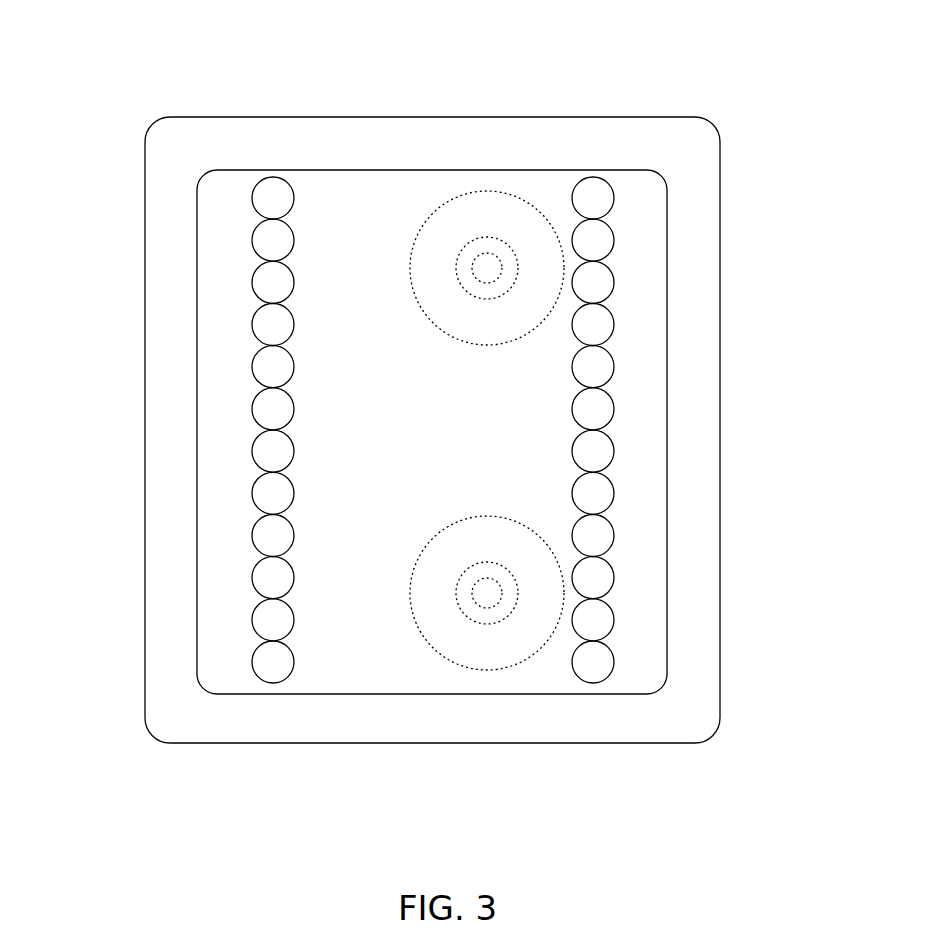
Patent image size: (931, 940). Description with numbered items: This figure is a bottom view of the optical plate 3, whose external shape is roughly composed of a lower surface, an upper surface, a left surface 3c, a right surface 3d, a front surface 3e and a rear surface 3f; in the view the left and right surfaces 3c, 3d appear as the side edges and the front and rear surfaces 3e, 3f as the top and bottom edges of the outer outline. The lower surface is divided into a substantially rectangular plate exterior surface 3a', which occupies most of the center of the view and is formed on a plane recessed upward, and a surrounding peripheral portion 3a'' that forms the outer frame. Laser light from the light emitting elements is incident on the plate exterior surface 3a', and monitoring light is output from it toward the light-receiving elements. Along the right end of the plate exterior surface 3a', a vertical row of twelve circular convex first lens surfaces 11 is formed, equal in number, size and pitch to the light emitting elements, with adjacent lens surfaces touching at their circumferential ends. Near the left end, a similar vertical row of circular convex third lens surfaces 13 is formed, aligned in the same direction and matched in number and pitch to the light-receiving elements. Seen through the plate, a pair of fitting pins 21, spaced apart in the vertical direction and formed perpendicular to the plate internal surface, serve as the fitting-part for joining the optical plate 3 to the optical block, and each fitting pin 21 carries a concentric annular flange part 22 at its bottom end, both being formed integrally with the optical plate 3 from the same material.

The optical plate 3 is at (101, 108).
The plate exterior surface 3a' is at (432, 380).
The peripheral portion 3a'' is at (432, 748).
The left surface 3c is at (145, 393).
The right surface 3d is at (720, 402).
The front surface 3e is at (438, 117).
The rear surface 3f is at (438, 743).
The first lens surface 11 is at (571, 369).
The third lens surface 13 is at (295, 369).
The fitting pin 21 is at (455, 268).
The flange part 22 is at (424, 315).